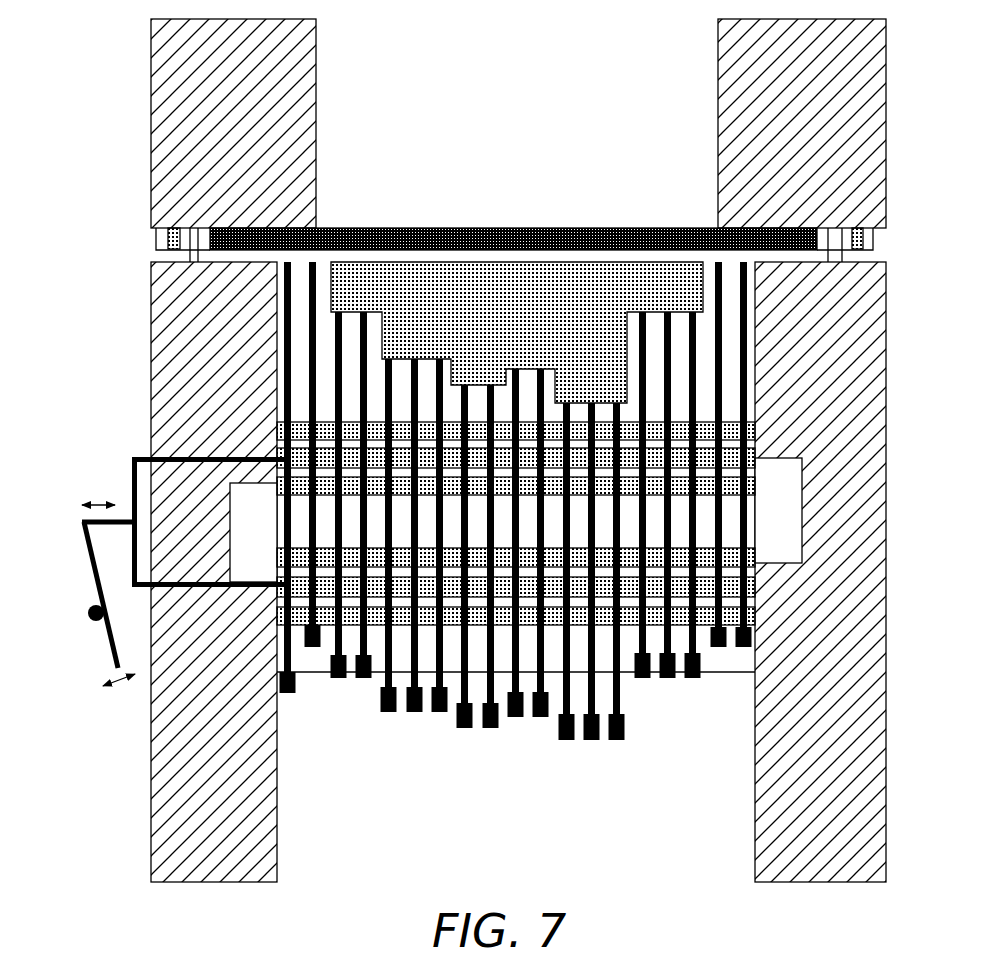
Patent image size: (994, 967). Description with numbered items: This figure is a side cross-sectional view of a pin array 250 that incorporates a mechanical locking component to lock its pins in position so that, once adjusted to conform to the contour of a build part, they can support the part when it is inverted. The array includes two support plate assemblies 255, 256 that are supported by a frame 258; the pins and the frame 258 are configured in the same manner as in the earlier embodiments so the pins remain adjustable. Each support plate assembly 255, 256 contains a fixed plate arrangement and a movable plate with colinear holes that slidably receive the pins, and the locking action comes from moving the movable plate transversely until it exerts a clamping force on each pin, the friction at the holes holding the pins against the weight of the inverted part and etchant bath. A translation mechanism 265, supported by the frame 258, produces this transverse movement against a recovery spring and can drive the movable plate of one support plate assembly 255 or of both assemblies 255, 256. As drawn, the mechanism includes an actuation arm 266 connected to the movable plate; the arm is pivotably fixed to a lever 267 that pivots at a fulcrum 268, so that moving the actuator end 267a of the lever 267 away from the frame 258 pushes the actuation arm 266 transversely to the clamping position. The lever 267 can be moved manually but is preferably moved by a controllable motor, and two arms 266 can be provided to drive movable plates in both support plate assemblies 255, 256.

The pin array 250 is at (130, 324).
The support plate assembly 255 is at (760, 421).
The support plate assembly 256 is at (760, 615).
The frame 258 is at (852, 777).
The translation mechanism 265 is at (151, 574).
The actuation arm 266 is at (193, 455).
The lever 267 is at (107, 637).
The actuator end 267a is at (110, 667).
The fulcrum 268 is at (86, 619).